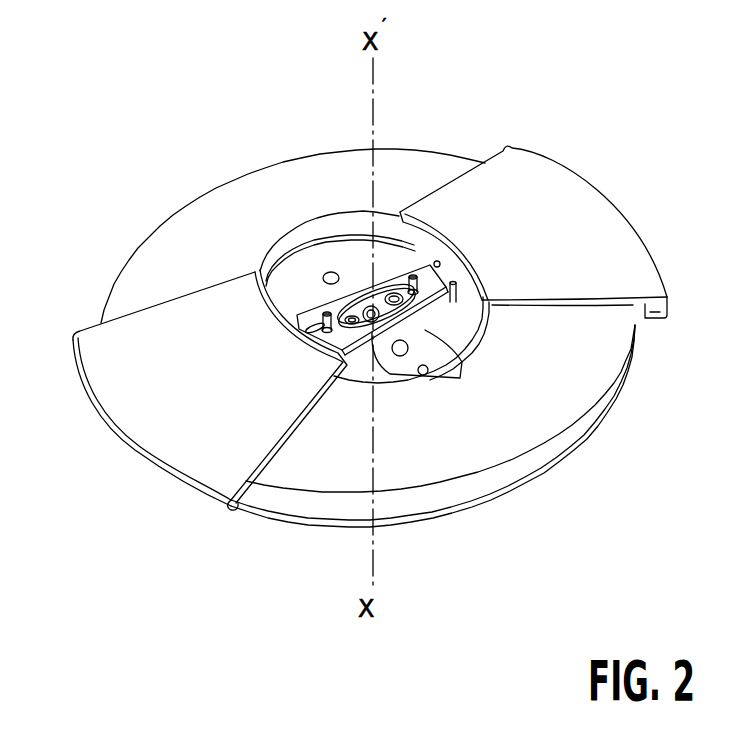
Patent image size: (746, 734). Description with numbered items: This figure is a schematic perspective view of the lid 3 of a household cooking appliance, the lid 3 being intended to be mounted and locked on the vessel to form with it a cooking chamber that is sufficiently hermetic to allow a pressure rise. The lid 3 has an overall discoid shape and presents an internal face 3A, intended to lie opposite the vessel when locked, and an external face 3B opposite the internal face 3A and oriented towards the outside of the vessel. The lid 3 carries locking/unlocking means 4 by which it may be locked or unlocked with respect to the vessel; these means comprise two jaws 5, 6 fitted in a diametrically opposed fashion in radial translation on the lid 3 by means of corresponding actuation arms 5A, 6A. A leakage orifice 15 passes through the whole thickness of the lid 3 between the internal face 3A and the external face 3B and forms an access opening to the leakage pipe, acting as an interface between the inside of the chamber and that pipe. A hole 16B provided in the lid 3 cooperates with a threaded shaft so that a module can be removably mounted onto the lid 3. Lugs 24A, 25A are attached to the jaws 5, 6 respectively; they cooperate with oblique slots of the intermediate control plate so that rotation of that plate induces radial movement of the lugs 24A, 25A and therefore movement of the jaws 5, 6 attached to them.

The lid 3 is at (368, 364).
The internal face 3A is at (538, 504).
The external face 3B is at (208, 213).
The locking/unlocking means 4 is at (188, 381).
The jaw 5 is at (188, 370).
The actuation arm 5A is at (150, 330).
The jaw 6 is at (566, 249).
The actuation arm 6A is at (553, 203).
The leakage orifice 15 is at (331, 272).
The hole 16B is at (371, 306).
The lug 24A is at (412, 275).
The lug 25A is at (322, 314).